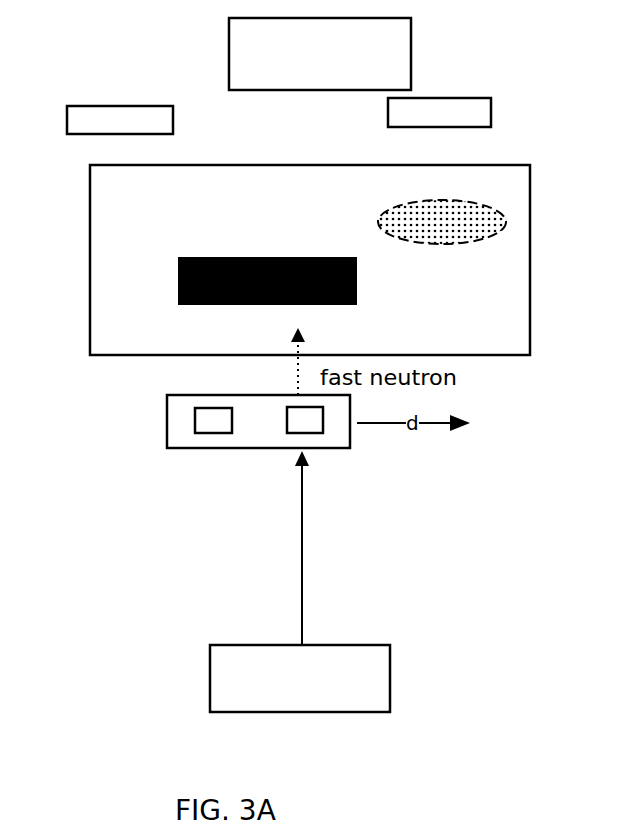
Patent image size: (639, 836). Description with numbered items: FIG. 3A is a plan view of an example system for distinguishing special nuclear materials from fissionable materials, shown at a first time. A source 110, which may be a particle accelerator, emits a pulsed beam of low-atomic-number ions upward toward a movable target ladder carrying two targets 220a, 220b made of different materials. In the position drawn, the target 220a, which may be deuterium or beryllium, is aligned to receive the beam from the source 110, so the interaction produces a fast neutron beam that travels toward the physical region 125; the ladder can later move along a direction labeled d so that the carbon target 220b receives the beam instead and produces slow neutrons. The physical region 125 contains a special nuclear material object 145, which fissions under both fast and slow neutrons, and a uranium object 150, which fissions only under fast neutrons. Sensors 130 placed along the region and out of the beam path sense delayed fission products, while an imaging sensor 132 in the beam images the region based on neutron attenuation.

The imaging sensor 132 is at (320, 54).
The sensor 130 is at (279, 116).
The physical region 125 is at (525, 148).
The special nuclear material object 145 is at (192, 256).
The uranium 238 object 150 is at (404, 210).
The target 220a is at (210, 421).
The target 220b is at (305, 421).
The source 110 is at (300, 678).